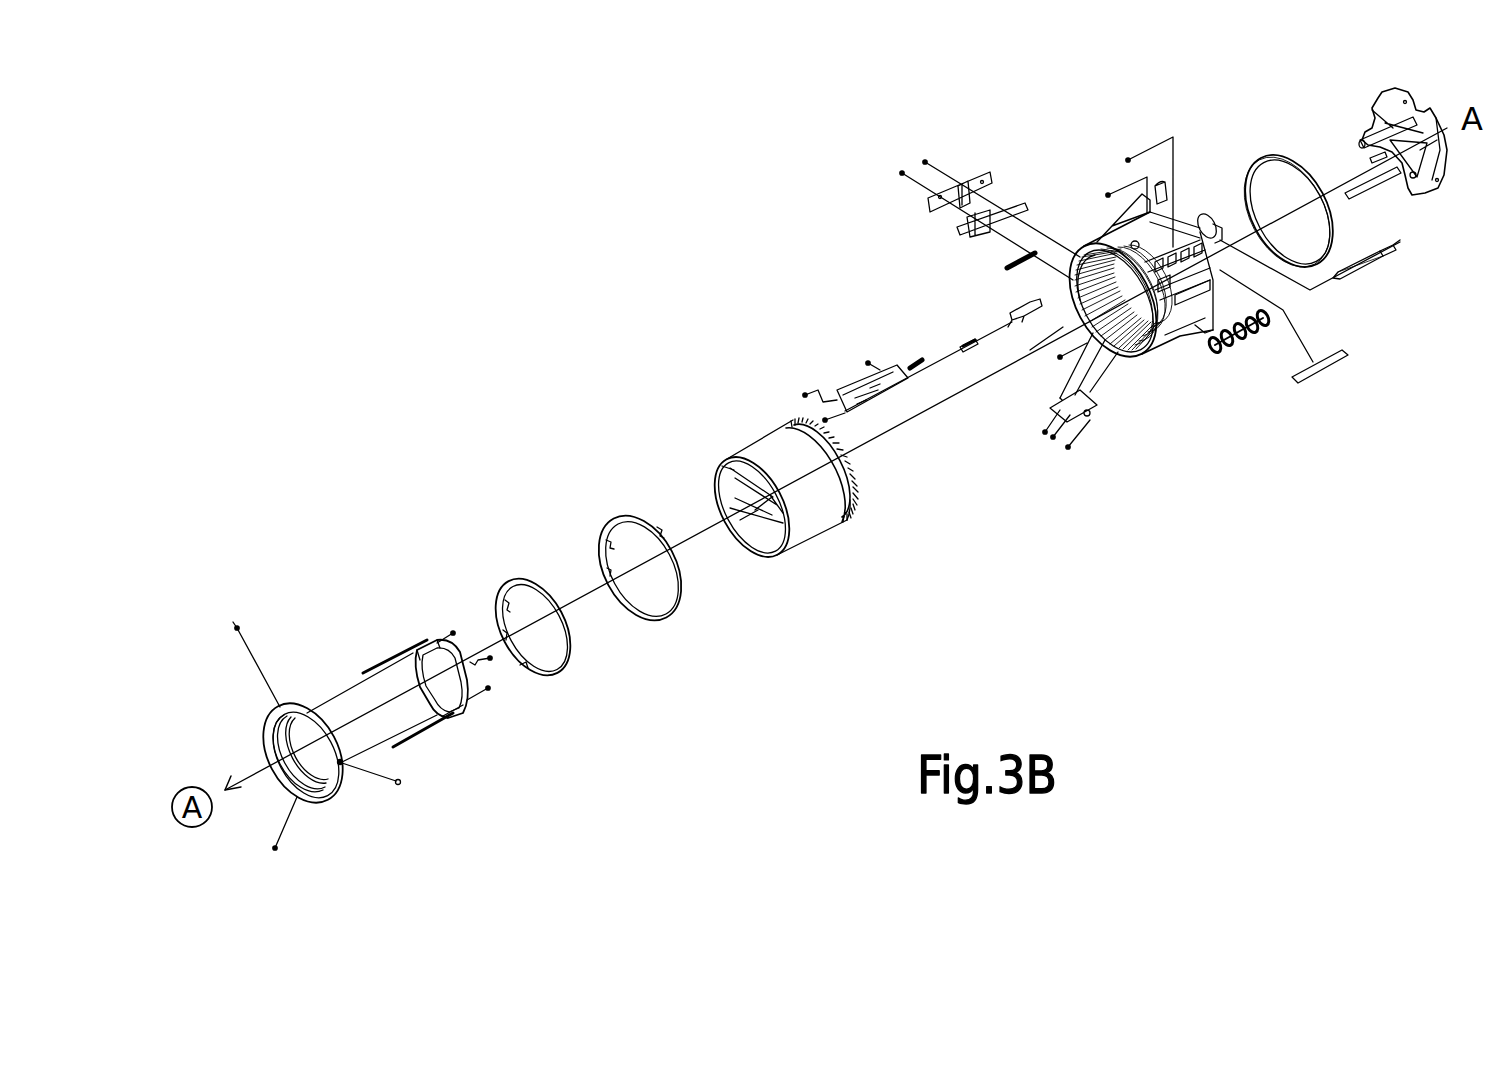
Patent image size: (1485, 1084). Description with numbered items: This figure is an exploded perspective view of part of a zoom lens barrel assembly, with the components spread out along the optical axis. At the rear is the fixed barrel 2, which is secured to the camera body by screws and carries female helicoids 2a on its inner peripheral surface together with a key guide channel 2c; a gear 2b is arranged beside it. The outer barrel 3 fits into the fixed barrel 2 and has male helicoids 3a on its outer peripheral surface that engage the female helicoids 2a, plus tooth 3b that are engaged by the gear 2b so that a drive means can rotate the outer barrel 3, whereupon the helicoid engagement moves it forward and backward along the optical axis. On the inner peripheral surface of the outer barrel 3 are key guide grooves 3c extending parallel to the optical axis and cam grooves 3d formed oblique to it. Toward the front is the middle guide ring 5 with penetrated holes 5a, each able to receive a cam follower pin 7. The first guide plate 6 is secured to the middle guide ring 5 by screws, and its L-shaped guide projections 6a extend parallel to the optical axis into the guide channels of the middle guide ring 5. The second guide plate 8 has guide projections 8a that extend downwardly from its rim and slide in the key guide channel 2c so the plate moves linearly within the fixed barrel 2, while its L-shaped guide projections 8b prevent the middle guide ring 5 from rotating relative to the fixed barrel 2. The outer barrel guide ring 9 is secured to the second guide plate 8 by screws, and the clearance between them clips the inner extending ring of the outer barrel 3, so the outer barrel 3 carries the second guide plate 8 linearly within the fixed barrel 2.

The fixed barrel 2 is at (1108, 225).
The female helicoids 2a is at (1095, 255).
The gear 2b is at (1238, 343).
The key guide channel 2c is at (1150, 343).
The outer barrel 3 is at (755, 440).
The male helicoids 3a is at (852, 490).
The tooth 3b is at (812, 425).
The key guide grooves 3c is at (735, 517).
The cam grooves 3d is at (720, 471).
The middle guide ring 5 is at (285, 706).
The penetrated holes 5a is at (341, 764).
The first guide plate 6 is at (403, 650).
The L-shaped guide projections 6a is at (440, 725).
The cam follower pin 7 is at (382, 782).
The second guide plate 8 is at (1400, 90).
The guide projections 8a is at (1420, 197).
The L-shaped guide projections 8b is at (1370, 130).
The outer barrel guide ring 9 is at (1265, 157).